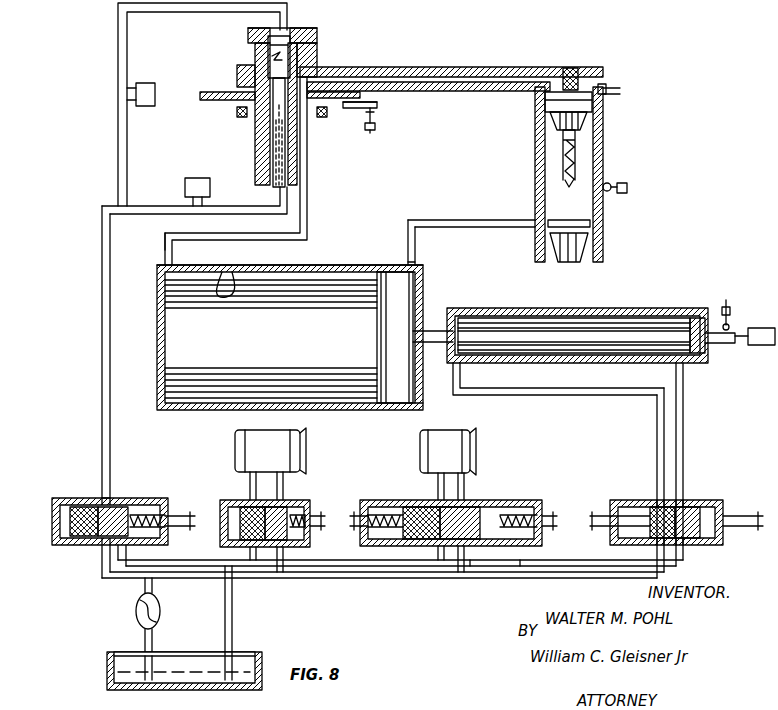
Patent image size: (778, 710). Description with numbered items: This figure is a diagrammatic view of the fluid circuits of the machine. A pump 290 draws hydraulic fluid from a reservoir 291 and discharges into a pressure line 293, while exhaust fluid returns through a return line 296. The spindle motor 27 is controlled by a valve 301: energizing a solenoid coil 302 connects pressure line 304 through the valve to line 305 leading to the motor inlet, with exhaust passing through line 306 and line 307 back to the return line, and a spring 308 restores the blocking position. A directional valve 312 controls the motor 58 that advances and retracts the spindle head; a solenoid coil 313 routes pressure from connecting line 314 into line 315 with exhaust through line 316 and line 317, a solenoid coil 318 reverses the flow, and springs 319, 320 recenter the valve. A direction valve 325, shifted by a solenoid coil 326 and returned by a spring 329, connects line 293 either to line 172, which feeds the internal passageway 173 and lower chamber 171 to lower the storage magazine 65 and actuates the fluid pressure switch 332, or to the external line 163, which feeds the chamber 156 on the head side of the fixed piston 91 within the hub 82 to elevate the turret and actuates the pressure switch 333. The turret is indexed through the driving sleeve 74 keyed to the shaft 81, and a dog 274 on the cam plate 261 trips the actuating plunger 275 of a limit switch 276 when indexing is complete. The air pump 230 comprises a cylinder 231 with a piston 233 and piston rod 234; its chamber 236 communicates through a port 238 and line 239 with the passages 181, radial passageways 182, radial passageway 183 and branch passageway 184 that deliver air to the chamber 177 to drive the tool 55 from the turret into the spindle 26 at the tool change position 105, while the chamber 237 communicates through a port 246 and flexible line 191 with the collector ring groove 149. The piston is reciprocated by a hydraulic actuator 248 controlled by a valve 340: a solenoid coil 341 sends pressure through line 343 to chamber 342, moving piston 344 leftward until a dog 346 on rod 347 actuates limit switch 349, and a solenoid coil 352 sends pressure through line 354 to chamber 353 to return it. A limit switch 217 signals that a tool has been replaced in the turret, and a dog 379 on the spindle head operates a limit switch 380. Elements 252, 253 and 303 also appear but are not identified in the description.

The external line 163 is at (118, 25).
The pressure switch 333 is at (165, 70).
The fluid pressure switch 332 is at (197, 172).
The line 172 is at (102, 226).
The axially extending passages 181 is at (308, 168).
The line 239 is at (165, 250).
The hub 82 is at (305, 30).
The chamber 156 is at (268, 50).
The fixed piston 91 is at (275, 60).
The radial passageways 182 is at (307, 62).
The lower chamber 171 is at (273, 140).
The internal passageway 173 is at (279, 150).
The flange 253 is at (208, 100).
The actuating plunger 275 is at (360, 118).
The driving sleeve 74 is at (252, 120).
The shaft 81 is at (262, 170).
The cam plate 261 is at (372, 102).
The dog 274 is at (374, 112).
The limit switch 276 is at (368, 130).
The switch 252 is at (389, 127).
The radial passageway 183 is at (480, 67).
The branch passageway 184 is at (563, 68).
The chamber 177 is at (545, 100).
The limit switch 217 is at (620, 90).
The storage magazine 65 is at (396, 34).
The spindle 26 is at (603, 165).
The tool 55 is at (542, 135).
The tool change position 105 is at (564, 274).
The collector ring groove 149 is at (596, 222).
The limit switch 380 is at (627, 188).
The dog 379 is at (608, 192).
The flexible line 191 is at (462, 214).
The cylinder 231 is at (340, 255).
The chamber 236 is at (235, 275).
The port 238 is at (176, 272).
The piston 233 is at (392, 335).
The port 246 is at (408, 262).
The pump 230 is at (358, 240).
The chamber 237 is at (418, 406).
The piston rod 234 is at (440, 330).
The hydraulic actuator 248 is at (646, 301).
The chamber 353 is at (520, 320).
The chamber 342 is at (700, 316).
The limit switch 349 is at (727, 300).
The dog 346 is at (768, 316).
The rod 347 is at (752, 342).
The line 343 is at (600, 314).
The piston 344 is at (675, 370).
The line 354 is at (657, 453).
The direction valve 325 is at (52, 492).
The spring 329 is at (160, 488).
The solenoid coil 326 is at (192, 514).
The conduit 303 is at (222, 544).
The spindle motor 27 is at (258, 440).
The line 306 is at (250, 486).
The line 305 is at (283, 482).
The valve 301 is at (311, 485).
The solenoid coil 302 is at (310, 516).
The solenoid coil 313 is at (304, 530).
The spring 308 is at (270, 548).
The line 307 is at (250, 568).
The pressure line 304 is at (280, 575).
The pressure line 293 is at (158, 580).
The pump 290 is at (136, 610).
The reservoir 291 is at (107, 672).
The motor 58 is at (425, 453).
The line 315 is at (438, 483).
The line 316 is at (464, 483).
The directional valve 312 is at (553, 480).
The line 317 is at (384, 566).
The solenoid coil 318 is at (550, 518).
The connecting line 314 is at (440, 566).
The return line 296 is at (450, 578).
The spring 320 is at (476, 568).
The spring 319 is at (522, 568).
The valve 340 is at (703, 486).
The solenoid coil 341 is at (595, 530).
The solenoid coil 352 is at (766, 498).